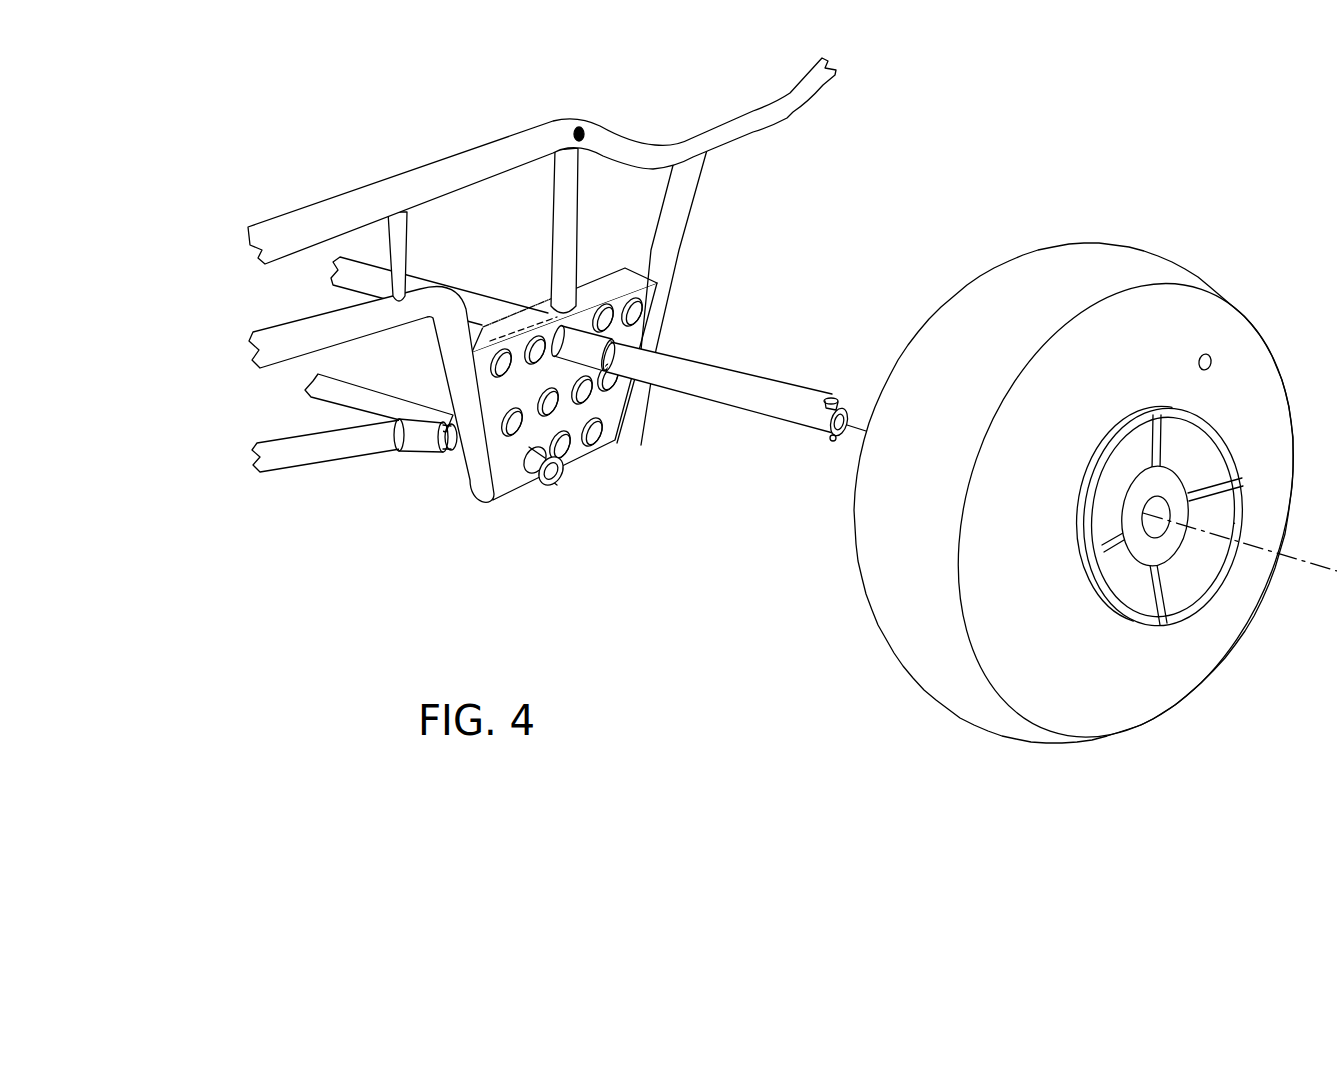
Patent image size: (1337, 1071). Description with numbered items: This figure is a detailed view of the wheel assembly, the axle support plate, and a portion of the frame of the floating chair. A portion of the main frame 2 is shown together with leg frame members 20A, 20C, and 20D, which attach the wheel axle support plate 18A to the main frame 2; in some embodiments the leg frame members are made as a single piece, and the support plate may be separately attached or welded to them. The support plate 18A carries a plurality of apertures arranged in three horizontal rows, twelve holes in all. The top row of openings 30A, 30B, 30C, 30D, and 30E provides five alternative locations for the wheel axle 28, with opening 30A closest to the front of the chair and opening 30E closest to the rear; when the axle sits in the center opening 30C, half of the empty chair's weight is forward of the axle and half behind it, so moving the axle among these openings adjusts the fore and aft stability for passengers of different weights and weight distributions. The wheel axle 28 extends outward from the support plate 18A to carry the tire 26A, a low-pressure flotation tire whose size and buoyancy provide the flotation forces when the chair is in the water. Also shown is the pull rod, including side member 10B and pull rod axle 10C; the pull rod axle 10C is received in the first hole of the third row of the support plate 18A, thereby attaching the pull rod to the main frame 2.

The main frame 2 is at (803, 93).
The side member 10B is at (327, 452).
The pull rod axle 10C is at (343, 391).
The wheel axle support plate 18A is at (505, 490).
The leg frame member 20A is at (688, 182).
The leg frame member 20C is at (400, 240).
The leg frame member 20D is at (291, 350).
The tire 26A is at (1189, 654).
The wheel axle 28 is at (750, 387).
The opening 30A is at (493, 386).
The opening 30B is at (547, 362).
The opening 30C is at (588, 300).
The opening 30D is at (647, 350).
The opening 30E is at (660, 300).